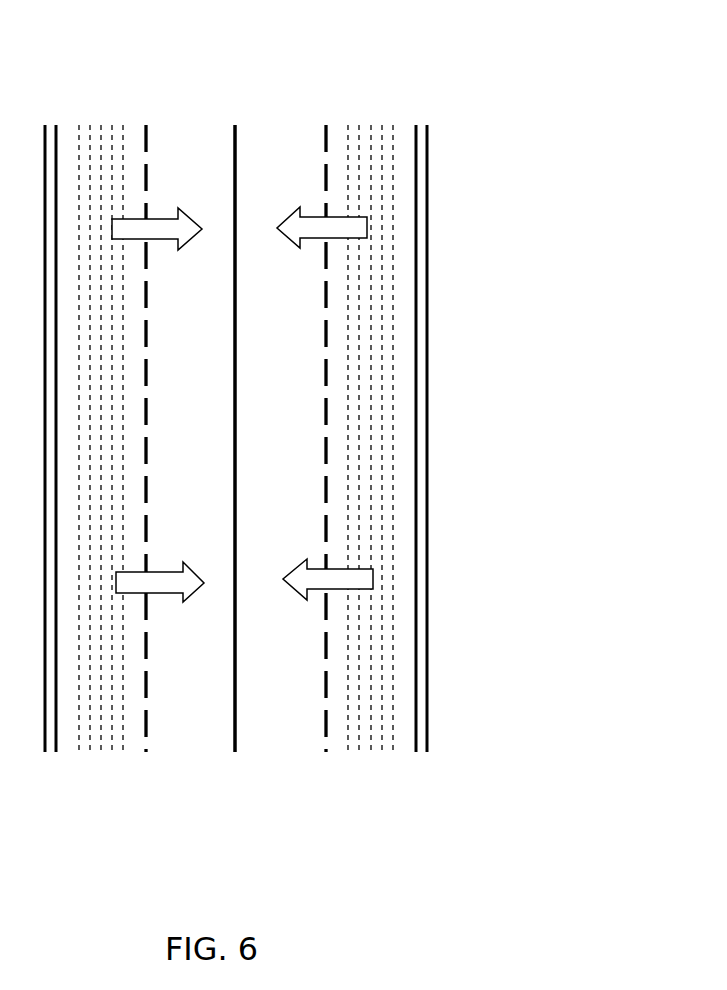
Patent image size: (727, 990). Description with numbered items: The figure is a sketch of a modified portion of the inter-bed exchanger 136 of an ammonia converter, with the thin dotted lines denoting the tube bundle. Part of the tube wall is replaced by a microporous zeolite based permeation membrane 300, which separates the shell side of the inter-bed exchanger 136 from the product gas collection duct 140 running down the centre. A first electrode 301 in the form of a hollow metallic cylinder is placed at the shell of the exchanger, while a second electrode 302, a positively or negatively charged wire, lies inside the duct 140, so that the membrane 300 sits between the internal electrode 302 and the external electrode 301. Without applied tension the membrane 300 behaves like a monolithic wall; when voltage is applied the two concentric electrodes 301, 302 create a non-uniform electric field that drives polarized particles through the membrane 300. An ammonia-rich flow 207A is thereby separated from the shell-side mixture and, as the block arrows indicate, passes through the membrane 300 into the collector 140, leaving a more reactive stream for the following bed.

The inter-bed exchanger 136 is at (492, 354).
The product gas collection duct 140 is at (283, 513).
The ammonia-rich flow 207A is at (242, 429).
The microporous zeolite based permeation membrane 300 is at (147, 178).
The first electrode 301 is at (415, 145).
The second electrode 302 is at (235, 170).